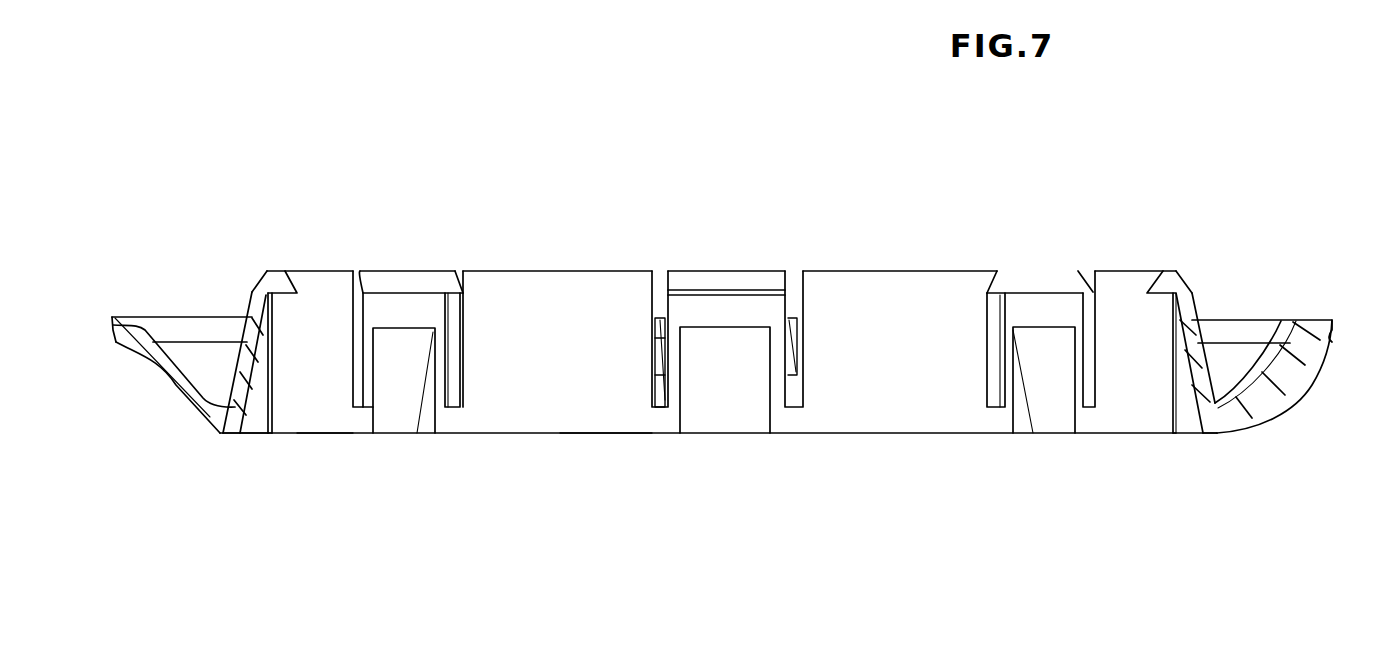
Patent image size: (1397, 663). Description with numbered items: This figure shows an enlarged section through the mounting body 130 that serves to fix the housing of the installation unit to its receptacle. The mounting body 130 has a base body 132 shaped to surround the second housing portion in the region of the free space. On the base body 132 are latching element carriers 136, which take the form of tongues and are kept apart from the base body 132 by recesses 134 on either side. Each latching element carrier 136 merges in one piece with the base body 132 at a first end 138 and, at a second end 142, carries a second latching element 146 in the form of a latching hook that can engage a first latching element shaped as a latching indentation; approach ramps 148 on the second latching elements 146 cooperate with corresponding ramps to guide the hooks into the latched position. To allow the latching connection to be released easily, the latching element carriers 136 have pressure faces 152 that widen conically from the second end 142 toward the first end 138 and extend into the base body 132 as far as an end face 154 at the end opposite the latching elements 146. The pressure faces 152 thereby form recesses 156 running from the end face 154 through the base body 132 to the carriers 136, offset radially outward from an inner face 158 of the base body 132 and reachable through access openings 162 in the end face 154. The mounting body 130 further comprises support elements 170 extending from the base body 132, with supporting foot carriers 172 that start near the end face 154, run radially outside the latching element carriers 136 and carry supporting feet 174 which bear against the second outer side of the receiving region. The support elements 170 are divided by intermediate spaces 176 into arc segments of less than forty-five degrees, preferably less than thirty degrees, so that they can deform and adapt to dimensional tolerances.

The mounting body 130 is at (576, 455).
The base body 132 is at (195, 433).
The recesses 134 is at (357, 333).
The latching element carriers 136 is at (222, 360).
The first end 138 is at (370, 397).
The second end 142 is at (453, 257).
The second latching elements 146 is at (252, 265).
The approach ramps 148 is at (413, 273).
The pressure faces 152 is at (297, 433).
The end face 154 is at (230, 433).
The recesses 156 is at (252, 433).
The inner face 158 is at (312, 433).
The access openings 162 is at (266, 433).
The support elements 170 is at (172, 398).
The supporting foot carriers 172 is at (152, 375).
The supporting feet 174 is at (112, 322).
The intermediate spaces 176 is at (1240, 358).